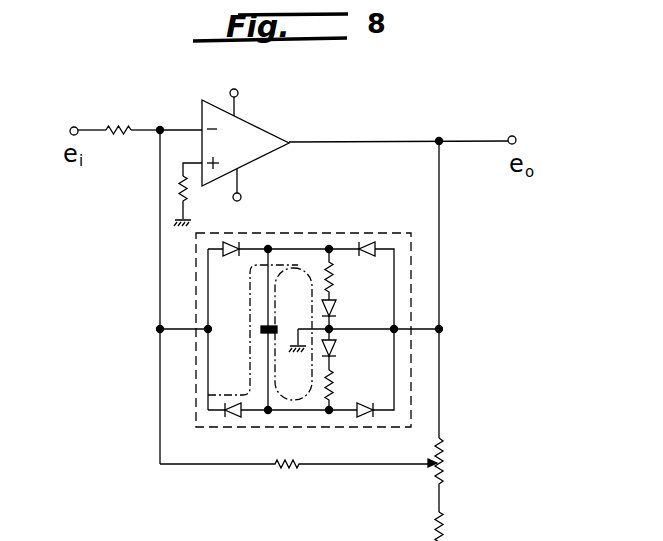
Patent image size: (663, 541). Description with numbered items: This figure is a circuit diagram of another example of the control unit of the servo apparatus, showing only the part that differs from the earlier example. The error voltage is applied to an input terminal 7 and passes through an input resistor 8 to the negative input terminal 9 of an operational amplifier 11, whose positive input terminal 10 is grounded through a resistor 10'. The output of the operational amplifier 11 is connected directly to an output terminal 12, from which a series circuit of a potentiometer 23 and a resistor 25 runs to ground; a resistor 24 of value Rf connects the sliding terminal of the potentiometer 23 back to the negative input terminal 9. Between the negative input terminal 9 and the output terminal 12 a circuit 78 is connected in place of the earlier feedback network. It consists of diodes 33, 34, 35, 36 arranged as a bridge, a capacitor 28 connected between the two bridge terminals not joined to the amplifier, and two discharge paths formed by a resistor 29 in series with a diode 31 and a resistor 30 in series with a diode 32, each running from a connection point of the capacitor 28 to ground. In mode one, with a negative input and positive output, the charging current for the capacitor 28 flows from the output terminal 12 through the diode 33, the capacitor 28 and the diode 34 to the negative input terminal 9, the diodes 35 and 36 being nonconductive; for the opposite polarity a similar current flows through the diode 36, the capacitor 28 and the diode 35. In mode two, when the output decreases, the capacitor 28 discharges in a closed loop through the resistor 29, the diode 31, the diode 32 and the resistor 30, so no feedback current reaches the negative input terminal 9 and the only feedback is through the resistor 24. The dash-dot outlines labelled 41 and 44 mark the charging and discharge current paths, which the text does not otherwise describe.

The input terminal 7 is at (74, 127).
The input resistor 8 is at (120, 136).
The negative input terminal 9 is at (188, 128).
The positive input terminal 10 is at (182, 156).
The resistor 10' is at (204, 206).
The operational amplifier 11 is at (278, 116).
The output terminal 12 is at (512, 136).
The potentiometer 23 is at (445, 452).
The resistor 24 is at (290, 467).
The resistor 25 is at (437, 528).
The capacitor 28 is at (276, 326).
The resistor 29 is at (335, 278).
The resistor 30 is at (338, 385).
The diode 31 is at (336, 308).
The diode 32 is at (337, 348).
The diode 33 is at (370, 244).
The diode 34 is at (226, 417).
The diode 35 is at (366, 417).
The diode 36 is at (228, 257).
The feedback path 41 is at (253, 330).
The feedback path 44 is at (293, 334).
The circuit 78 is at (336, 233).